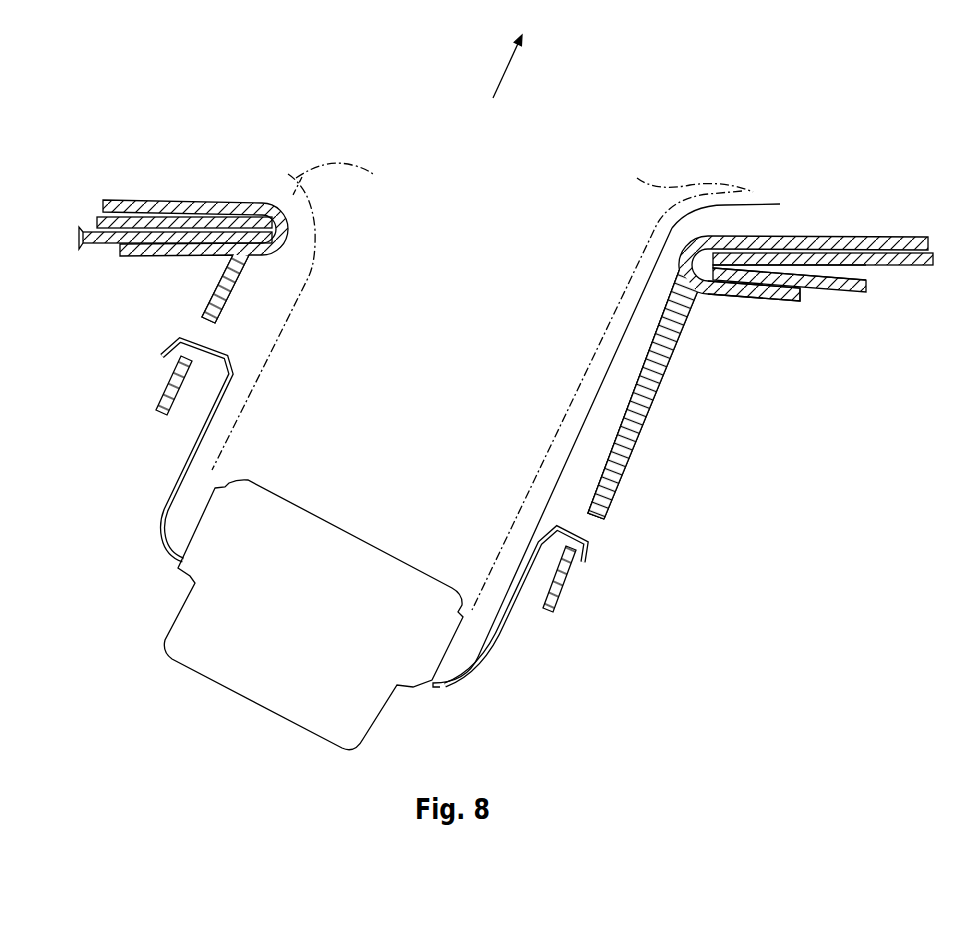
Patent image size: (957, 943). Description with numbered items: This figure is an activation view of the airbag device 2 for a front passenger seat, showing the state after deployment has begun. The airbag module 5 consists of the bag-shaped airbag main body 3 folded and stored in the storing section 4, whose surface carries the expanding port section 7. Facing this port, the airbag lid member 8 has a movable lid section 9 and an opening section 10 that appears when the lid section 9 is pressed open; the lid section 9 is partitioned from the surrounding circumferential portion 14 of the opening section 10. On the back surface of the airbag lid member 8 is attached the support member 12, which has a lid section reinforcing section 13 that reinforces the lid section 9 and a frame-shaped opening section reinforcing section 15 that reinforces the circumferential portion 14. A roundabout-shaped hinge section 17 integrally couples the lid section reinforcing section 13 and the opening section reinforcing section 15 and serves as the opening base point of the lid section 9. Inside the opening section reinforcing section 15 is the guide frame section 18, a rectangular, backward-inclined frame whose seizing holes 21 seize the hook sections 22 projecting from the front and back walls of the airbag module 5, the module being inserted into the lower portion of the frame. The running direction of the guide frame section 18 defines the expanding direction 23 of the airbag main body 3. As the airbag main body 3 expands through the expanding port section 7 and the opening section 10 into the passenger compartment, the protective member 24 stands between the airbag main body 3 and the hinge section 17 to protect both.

The airbag device 2 is at (803, 577).
The airbag main body 3 is at (314, 180).
The storing section 4 is at (480, 668).
The airbag module 5 is at (600, 653).
The expanding port section 7 is at (459, 294).
The airbag lid member 8 is at (843, 291).
The lid section 9 is at (95, 217).
The opening section 10 is at (388, 236).
The support member 12 is at (853, 357).
The lid section reinforcing section 13 is at (817, 268).
The circumferential portion 14 is at (84, 240).
The opening section reinforcing section 15 is at (747, 300).
The hinge section 17 is at (697, 327).
The guide frame section 18 is at (668, 382).
The seizing hole 21 is at (203, 320).
The hook section 22 is at (165, 350).
The expanding direction 23 is at (506, 71).
The protective member 24 is at (775, 208).